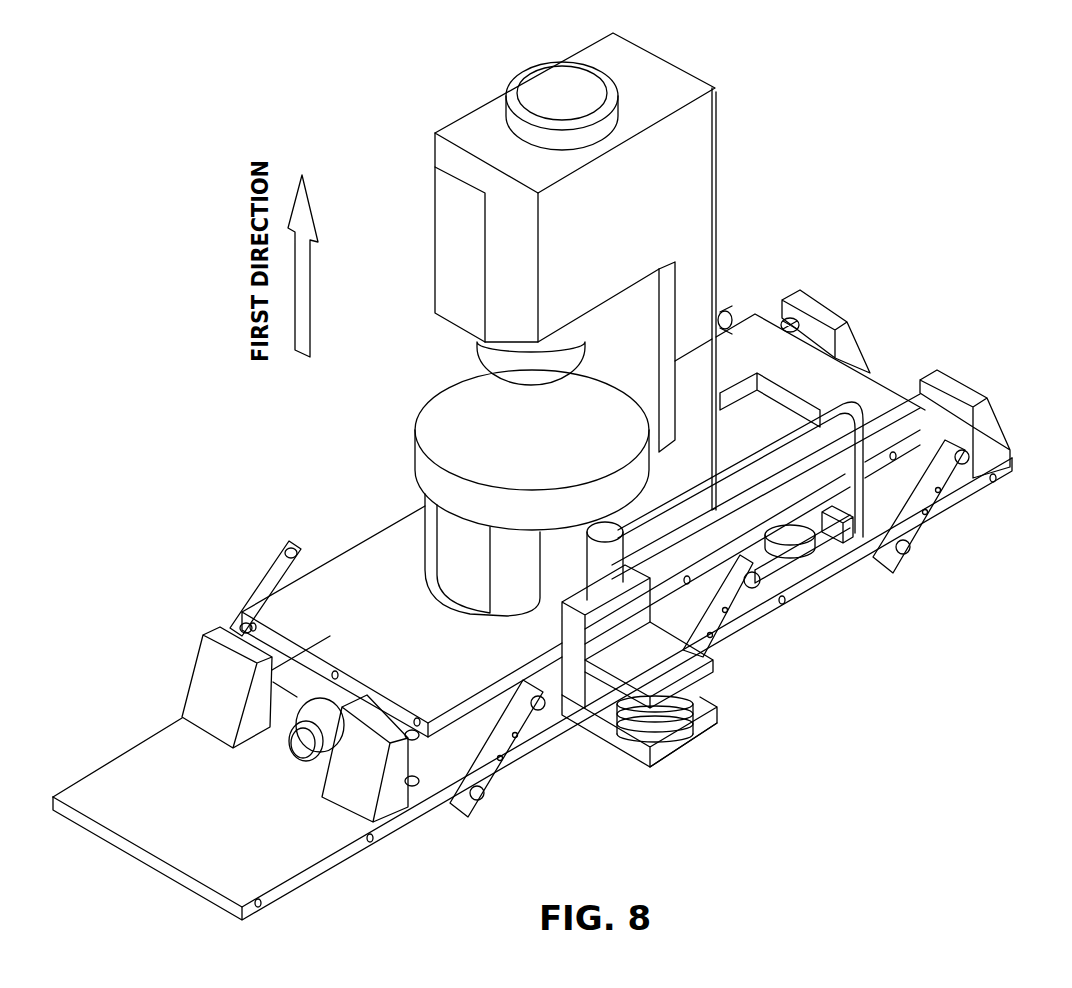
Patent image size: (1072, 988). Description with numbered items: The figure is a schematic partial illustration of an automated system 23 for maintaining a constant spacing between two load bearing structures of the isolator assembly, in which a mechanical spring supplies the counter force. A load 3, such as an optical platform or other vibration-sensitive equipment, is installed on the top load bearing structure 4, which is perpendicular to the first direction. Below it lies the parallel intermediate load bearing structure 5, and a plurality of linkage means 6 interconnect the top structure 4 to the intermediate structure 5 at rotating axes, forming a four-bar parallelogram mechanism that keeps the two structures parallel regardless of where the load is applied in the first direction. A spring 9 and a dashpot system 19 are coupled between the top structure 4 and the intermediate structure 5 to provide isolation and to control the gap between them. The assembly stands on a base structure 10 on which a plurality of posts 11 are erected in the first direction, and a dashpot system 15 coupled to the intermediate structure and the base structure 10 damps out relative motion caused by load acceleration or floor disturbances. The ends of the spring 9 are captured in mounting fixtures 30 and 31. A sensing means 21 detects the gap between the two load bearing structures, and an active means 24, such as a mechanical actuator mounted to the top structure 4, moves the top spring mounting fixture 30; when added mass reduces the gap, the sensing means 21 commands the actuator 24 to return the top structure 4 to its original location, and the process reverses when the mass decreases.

The load 3 is at (455, 230).
The top load bearing structure 4 is at (342, 583).
The intermediate load bearing structure 5 is at (817, 545).
The linkage means 6 is at (729, 292).
The spring 9 is at (672, 713).
The base structure 10 is at (130, 780).
The posts 11 is at (852, 348).
The dashpot system 15 is at (303, 747).
The dashpot system 19 is at (788, 553).
The sensing means 21 is at (840, 510).
The automated system 23 is at (678, 763).
The active means 24 is at (575, 672).
The top spring mounting fixture 30 is at (698, 677).
The mounting fixture 31 is at (623, 742).